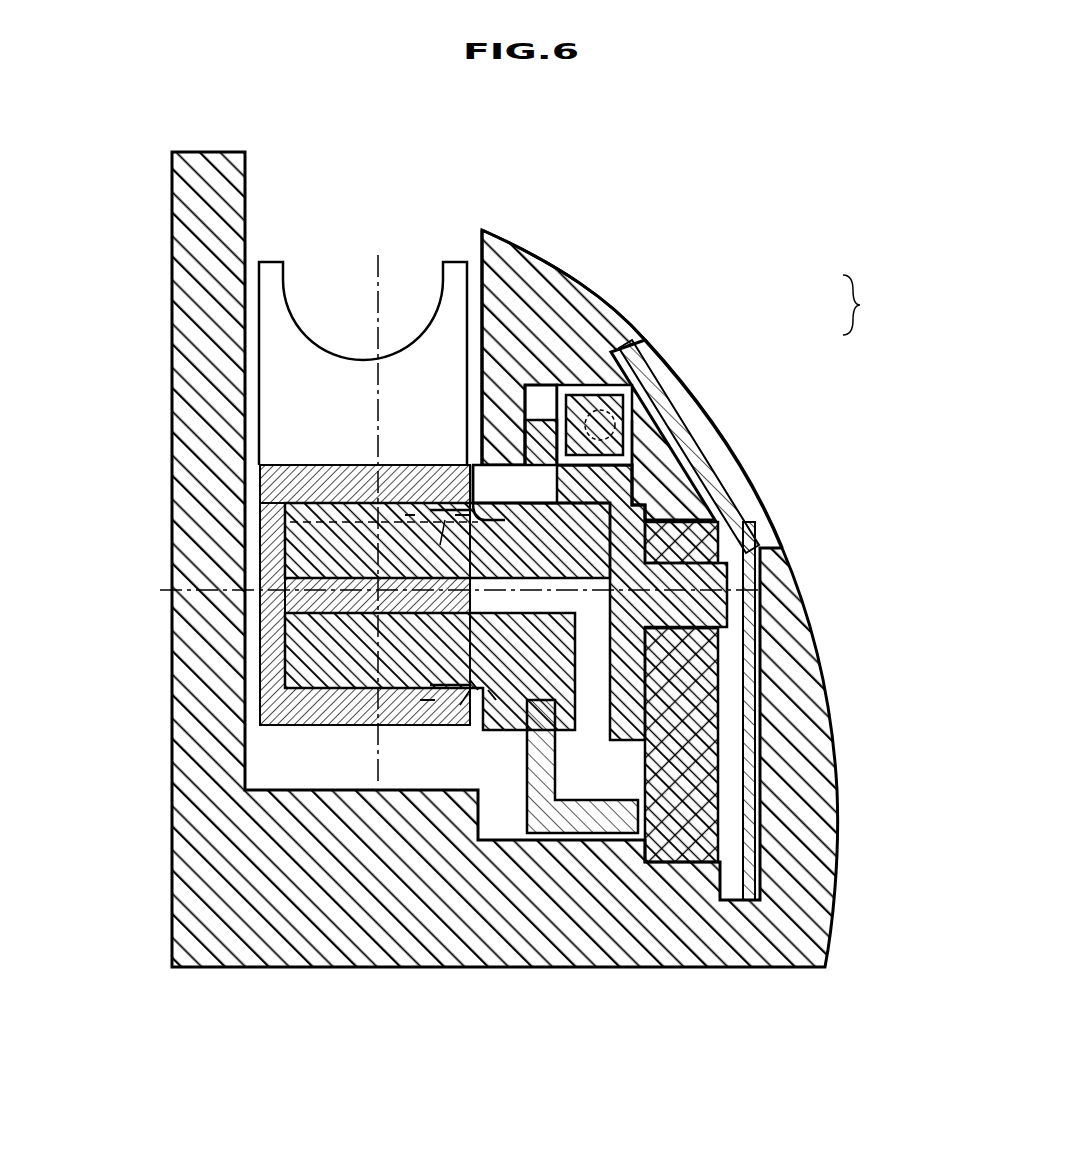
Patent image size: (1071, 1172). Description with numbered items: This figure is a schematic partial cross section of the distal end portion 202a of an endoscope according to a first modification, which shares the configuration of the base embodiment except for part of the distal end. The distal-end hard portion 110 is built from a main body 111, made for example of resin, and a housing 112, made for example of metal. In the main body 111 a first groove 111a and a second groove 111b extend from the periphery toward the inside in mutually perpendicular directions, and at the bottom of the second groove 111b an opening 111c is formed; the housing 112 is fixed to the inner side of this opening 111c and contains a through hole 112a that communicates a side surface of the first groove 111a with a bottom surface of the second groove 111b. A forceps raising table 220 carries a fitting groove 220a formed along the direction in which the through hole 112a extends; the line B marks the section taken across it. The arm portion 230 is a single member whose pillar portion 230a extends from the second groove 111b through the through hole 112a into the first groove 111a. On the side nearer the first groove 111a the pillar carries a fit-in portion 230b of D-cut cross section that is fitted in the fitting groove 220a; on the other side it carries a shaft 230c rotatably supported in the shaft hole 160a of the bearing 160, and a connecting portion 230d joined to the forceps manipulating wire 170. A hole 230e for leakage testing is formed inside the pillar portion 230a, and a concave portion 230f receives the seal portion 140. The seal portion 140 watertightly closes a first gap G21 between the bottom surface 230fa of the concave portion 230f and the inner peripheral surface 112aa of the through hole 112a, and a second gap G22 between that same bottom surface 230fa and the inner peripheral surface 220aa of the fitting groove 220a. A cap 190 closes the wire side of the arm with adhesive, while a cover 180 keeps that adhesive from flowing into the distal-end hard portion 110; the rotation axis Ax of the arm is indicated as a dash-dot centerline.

The distal-end hard portion 110 is at (905, 317).
The main body 111 is at (577, 292).
The first groove 111a is at (357, 226).
The second groove 111b is at (641, 511).
The opening 111c is at (548, 410).
The housing 112 is at (626, 346).
The through hole 112a is at (510, 527).
The inner peripheral surface 112aa is at (505, 518).
The seal portion 140 is at (498, 680).
The bearing 160 is at (724, 654).
The shaft hole 160a is at (688, 638).
The forceps manipulating wire 170 is at (614, 421).
The cover 180 is at (751, 530).
The cap 190 is at (681, 376).
The distal end portion 202a is at (601, 171).
The forceps raising table 220 is at (271, 259).
The fitting groove 220a is at (322, 547).
The inner peripheral surface 220aa is at (410, 513).
The arm portion 230 is at (445, 504).
The pillar portion 230a is at (305, 503).
The fit-in portion 230b is at (415, 503).
The shaft 230c is at (718, 565).
The connecting portion 230d is at (624, 428).
The hole for leakage test 230e is at (300, 600).
The concave portion 230f is at (427, 513).
The bottom surface 230fa is at (470, 680).
The axis Ax is at (436, 575).
The line B- B is at (412, 255).
The first gap G21 is at (462, 513).
The second gap G22 is at (445, 522).